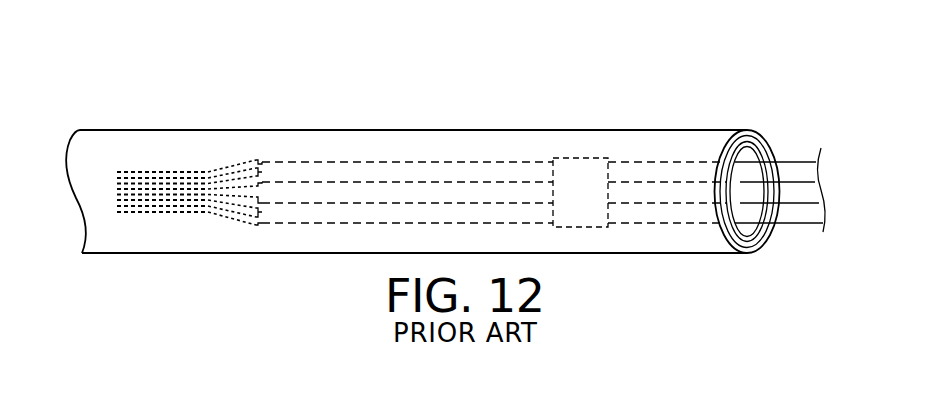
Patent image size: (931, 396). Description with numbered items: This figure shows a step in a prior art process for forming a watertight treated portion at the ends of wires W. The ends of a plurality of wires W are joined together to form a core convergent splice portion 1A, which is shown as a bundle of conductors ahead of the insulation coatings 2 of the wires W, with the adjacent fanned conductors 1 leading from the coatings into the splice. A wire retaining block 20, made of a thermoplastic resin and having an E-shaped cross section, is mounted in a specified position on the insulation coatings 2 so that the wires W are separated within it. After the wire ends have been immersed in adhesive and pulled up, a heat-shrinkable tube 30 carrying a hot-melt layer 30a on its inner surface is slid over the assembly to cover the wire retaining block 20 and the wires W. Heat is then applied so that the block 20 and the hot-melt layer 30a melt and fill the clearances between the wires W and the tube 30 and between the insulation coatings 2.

The fanned optical fiber ends 1 is at (238, 158).
The core convergent splice portion 1A is at (135, 173).
The insulation coatings 2 is at (445, 162).
The wire retaining block 20 is at (568, 158).
The heat-shrinkable tube 30 is at (365, 140).
The hot-melt layer 30a is at (743, 132).
The wires W is at (792, 168).